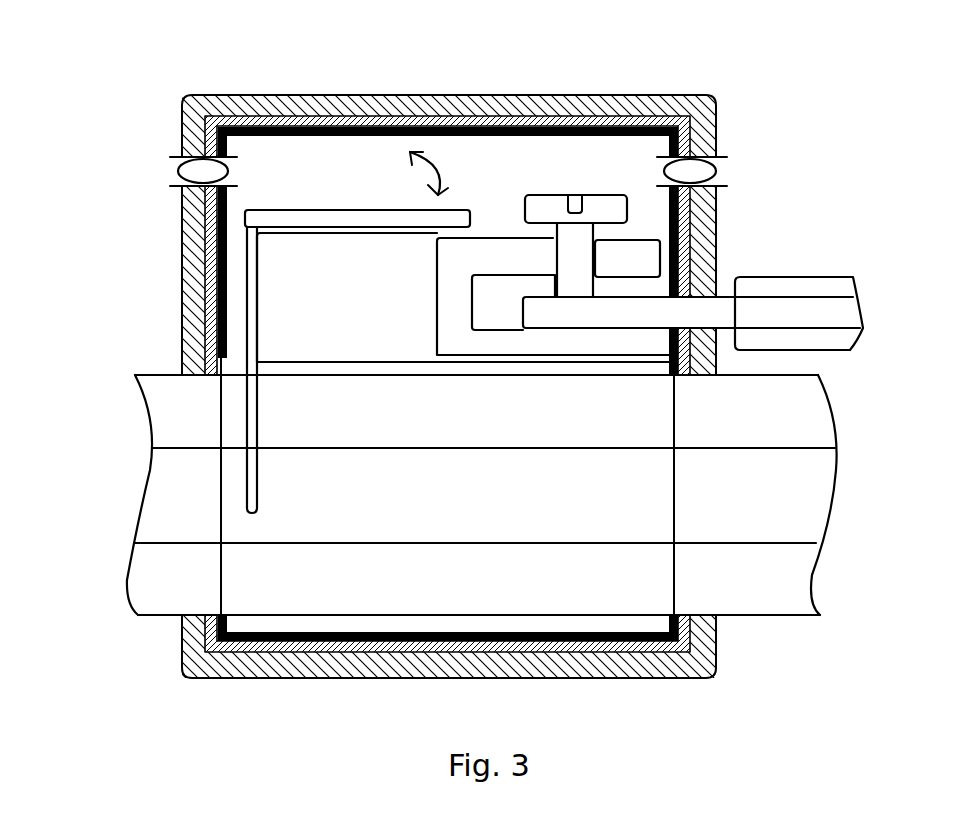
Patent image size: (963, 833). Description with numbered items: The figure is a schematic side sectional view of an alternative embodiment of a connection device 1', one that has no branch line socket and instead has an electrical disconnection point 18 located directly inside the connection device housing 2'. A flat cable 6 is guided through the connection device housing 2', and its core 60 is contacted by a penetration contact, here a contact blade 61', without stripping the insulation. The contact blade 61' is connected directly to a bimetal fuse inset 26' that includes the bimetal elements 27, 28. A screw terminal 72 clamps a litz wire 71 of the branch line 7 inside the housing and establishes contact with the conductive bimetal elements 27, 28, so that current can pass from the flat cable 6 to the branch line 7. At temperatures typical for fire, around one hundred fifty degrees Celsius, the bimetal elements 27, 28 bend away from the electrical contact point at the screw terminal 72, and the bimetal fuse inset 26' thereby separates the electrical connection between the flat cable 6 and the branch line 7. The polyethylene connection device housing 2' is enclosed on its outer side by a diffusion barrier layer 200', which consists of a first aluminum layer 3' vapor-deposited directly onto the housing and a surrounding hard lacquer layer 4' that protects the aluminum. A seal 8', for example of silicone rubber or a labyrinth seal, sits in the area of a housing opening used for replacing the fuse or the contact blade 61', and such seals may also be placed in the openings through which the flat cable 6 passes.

The connection device 1' is at (377, 357).
The connection device housing 2' is at (448, 338).
The first aluminum layer 3' is at (447, 347).
The hard lacquer layer 4' is at (449, 360).
The flat cable 6 is at (128, 575).
The branch line 7 is at (852, 350).
The seal 8' is at (482, 151).
The electrical disconnection point 18 is at (433, 243).
The bimetal fuse inset 26' is at (392, 112).
The bimetal element 27 is at (289, 214).
The bimetal element 28 is at (311, 227).
The core 60 is at (785, 505).
The contact blade 61' is at (172, 370).
The litz wire 71 is at (712, 312).
The screw terminal 72 is at (641, 212).
The diffusion barrier layer 200' is at (141, 249).